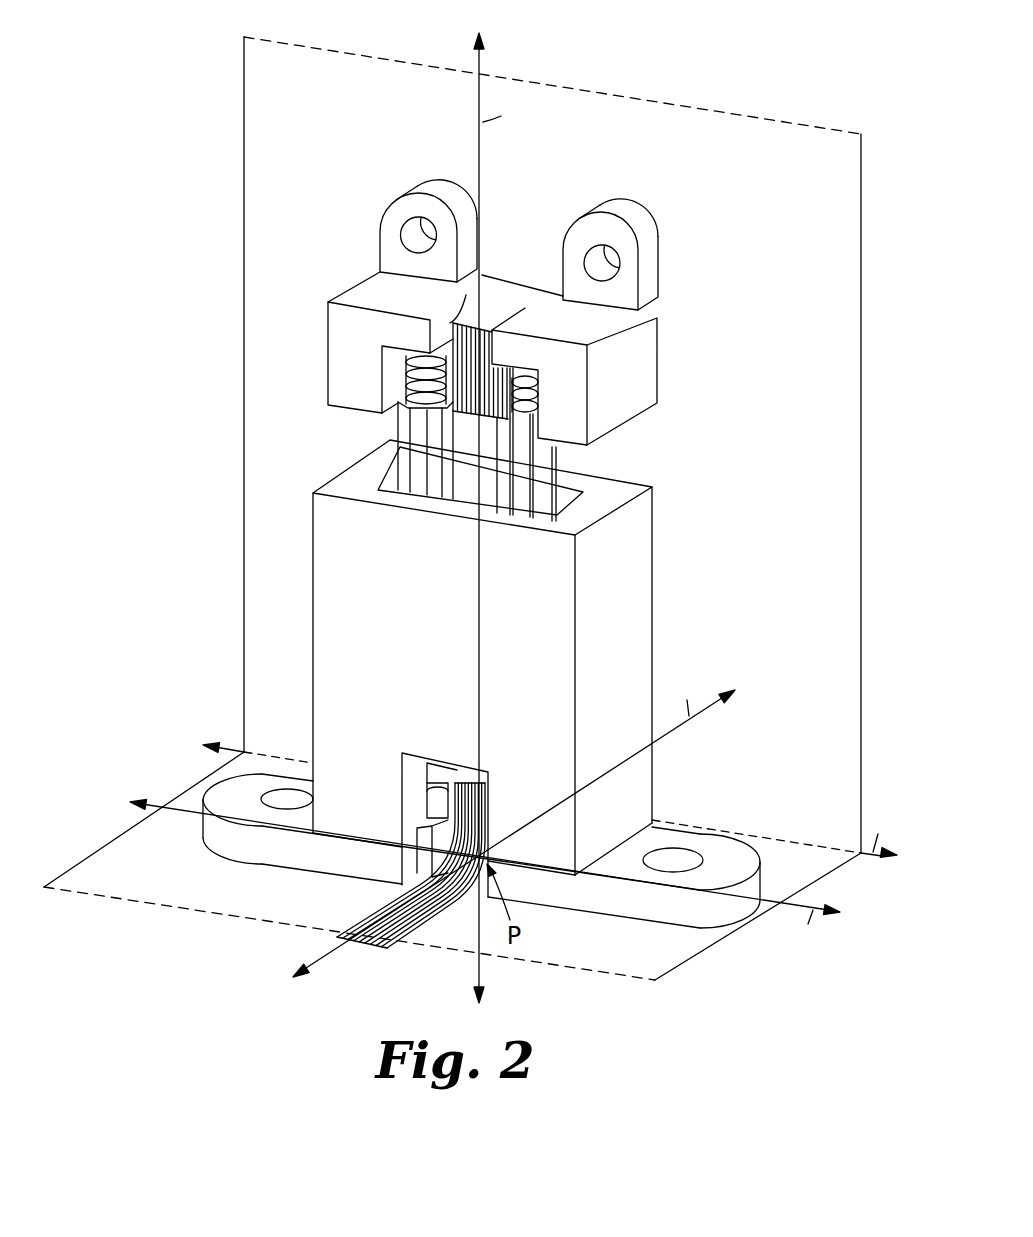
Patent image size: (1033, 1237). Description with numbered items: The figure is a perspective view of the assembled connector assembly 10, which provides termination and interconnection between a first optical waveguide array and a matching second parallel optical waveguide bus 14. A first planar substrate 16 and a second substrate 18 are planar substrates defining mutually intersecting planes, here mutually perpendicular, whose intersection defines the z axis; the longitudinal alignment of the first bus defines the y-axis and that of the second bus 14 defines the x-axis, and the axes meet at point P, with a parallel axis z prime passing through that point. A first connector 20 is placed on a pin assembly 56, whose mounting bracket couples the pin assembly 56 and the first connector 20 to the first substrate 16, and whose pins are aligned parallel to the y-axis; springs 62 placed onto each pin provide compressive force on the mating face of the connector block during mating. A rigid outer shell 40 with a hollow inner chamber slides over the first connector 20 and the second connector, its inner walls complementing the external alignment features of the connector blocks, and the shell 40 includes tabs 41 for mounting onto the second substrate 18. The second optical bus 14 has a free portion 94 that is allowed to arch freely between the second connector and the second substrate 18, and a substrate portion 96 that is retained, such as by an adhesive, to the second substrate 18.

The connector assembly 10 is at (652, 78).
The second optical waveguide bus 14 is at (350, 920).
The first planar substrate 16 is at (326, 124).
The second substrate 18 is at (162, 875).
The first connector 20 is at (552, 471).
The outer shell 40 is at (645, 606).
The tabs 41 is at (722, 843).
The pin assembly 56 is at (505, 268).
The springs 62 is at (405, 387).
The free portion 94 is at (456, 778).
The substrate portion 96 is at (418, 932).